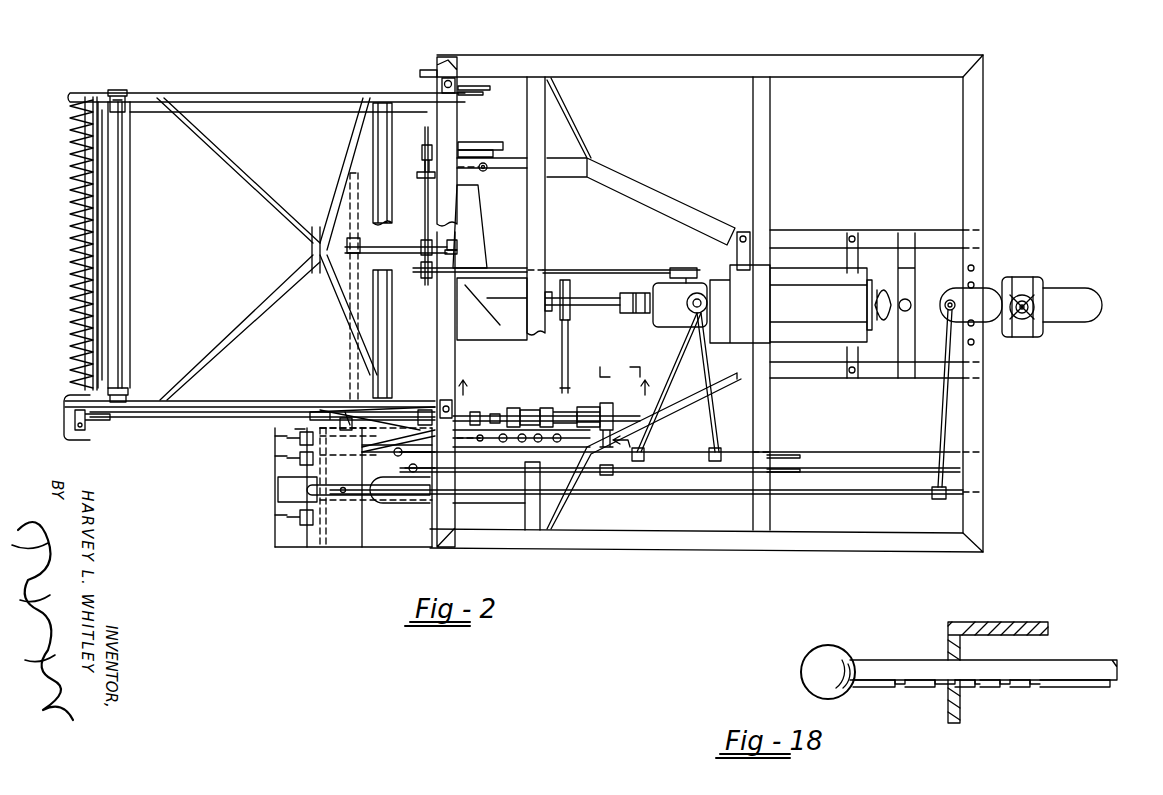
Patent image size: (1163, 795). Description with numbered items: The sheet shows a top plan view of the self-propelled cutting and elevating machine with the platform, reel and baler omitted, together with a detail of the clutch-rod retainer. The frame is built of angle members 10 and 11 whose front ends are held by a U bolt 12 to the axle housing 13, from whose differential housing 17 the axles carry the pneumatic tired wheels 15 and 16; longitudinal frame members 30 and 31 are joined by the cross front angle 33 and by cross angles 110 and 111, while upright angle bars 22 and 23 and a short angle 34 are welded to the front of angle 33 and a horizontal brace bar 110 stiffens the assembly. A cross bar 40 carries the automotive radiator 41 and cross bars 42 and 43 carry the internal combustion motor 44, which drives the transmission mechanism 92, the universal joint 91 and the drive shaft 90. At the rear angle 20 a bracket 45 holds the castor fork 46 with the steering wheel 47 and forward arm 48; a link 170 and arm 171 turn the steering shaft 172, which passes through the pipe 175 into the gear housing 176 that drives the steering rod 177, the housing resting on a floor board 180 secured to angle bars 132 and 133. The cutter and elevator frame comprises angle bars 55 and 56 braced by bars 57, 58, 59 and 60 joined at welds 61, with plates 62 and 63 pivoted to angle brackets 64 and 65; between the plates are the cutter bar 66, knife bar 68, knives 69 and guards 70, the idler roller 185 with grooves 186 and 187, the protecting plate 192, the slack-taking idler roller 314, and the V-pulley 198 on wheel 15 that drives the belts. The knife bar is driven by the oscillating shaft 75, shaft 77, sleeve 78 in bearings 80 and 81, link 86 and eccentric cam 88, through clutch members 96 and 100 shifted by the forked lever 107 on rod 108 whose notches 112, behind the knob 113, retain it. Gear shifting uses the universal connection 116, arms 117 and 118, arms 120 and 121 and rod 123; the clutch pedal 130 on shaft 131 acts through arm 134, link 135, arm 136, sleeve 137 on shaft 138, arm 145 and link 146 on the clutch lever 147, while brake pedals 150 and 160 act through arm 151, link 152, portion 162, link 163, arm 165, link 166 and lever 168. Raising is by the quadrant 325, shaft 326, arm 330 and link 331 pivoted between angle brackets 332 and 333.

In FIG. 2, the angle member 10 is at (684, 400).
In FIG. 2, the angle member 11 is at (568, 170).
In FIG. 2, the U bolt 12 is at (484, 172).
In FIG. 2, the axle housing 13 is at (483, 243).
In FIG. 2, the pneumatic tired wheel 15 is at (598, 274).
In FIG. 2, the pneumatic tired wheel 16 is at (482, 520).
In FIG. 2, the differential housing 17 is at (498, 318).
In FIG. 2, the rear angle 20 is at (978, 162).
In FIG. 2, the vertically disposed angle bar 22 is at (426, 68).
In FIG. 2, the vertically disposed angle bar 23 is at (455, 438).
In FIG. 2, the frame member 30 is at (675, 62).
In FIG. 2, the frame member 31 is at (712, 543).
In FIG. 2, the cross front angle 33 is at (450, 218).
In FIG. 18, the cross front angle 33 is at (1010, 624).
In FIG. 2, the short angle 34 is at (420, 178).
In FIG. 2, the cross bar 40 is at (912, 232).
In FIG. 2, the automotive radiator 41 is at (912, 280).
In FIG. 2, the cross bar 42 is at (848, 238).
In FIG. 2, the cross bar 43 is at (740, 232).
In FIG. 2, the internal combustion motor 44 is at (800, 304).
In FIG. 2, the bracket 45 is at (1035, 306).
In FIG. 2, the castor fork 46 is at (1038, 280).
In FIG. 2, the pneumatic tired wheel 47 is at (1090, 292).
In FIG. 2, the arm 48 is at (990, 288).
In FIG. 2, the angle bar 55 is at (288, 112).
In FIG. 2, the angle bar 56 is at (222, 400).
In FIG. 2, the brace bar 57 is at (248, 186).
In FIG. 2, the brace bar 58 is at (342, 203).
In FIG. 2, the brace bar 59 is at (256, 296).
In FIG. 2, the brace bar 60 is at (340, 294).
In FIG. 2, the welded joint 61 is at (312, 250).
In FIG. 2, the plate 62 is at (272, 94).
In FIG. 2, the plate 63 is at (248, 400).
In FIG. 2, the angle bracket 64 is at (450, 72).
In FIG. 2, the angle bracket 65 is at (444, 400).
In FIG. 2, the cutter bar 66 is at (70, 185).
In FIG. 2, the knife bar 68 is at (90, 430).
In FIG. 2, the knives 69 is at (70, 292).
In FIG. 2, the guards 70 is at (70, 248).
In FIG. 2, the oscillating shaft 75 is at (190, 420).
In FIG. 2, the shaft 77 is at (496, 410).
In FIG. 2, the sleeve 78 is at (531, 410).
In FIG. 2, the bearing 80 is at (514, 408).
In FIG. 2, the bearing 81 is at (546, 408).
In FIG. 2, the link 86 is at (562, 357).
In FIG. 2, the eccentric cam 88 is at (563, 280).
In FIG. 2, the drive shaft 90 is at (600, 306).
In FIG. 2, the universal joint 91 is at (635, 314).
In FIG. 2, the transmission mechanism 92 is at (668, 323).
In FIG. 2, the clutch member 96 is at (585, 406).
In FIG. 2, the clutch portion 100 is at (604, 403).
In FIG. 2, the forked lever 107 is at (612, 470).
In FIG. 2, the rod 108 is at (686, 471).
In FIG. 18, the rod 108 is at (1078, 664).
In FIG. 2, the cross angle 110 is at (545, 222).
In FIG. 2, the cross angle 111 is at (770, 420).
In FIG. 18, the notches 112 is at (975, 688).
In FIG. 18, the knob 113 is at (834, 650).
In FIG. 2, the universal connection 116 is at (688, 302).
In FIG. 2, the arm 117 is at (675, 358).
In FIG. 2, the arm 118 is at (712, 413).
In FIG. 2, the upwardly projecting arm 120 is at (640, 461).
In FIG. 2, the upwardly projecting arm 121 is at (720, 450).
In FIG. 2, the slidable and oscillatable rod 123 is at (778, 455).
In FIG. 2, the clutch pedal 130 is at (282, 520).
In FIG. 2, the shaft 131 is at (320, 548).
In FIG. 2, the angle bar 132 is at (408, 548).
In FIG. 2, the angle bar 133 is at (398, 457).
In FIG. 2, the downwardly projecting arm 134 is at (335, 412).
In FIG. 2, the link 135 is at (346, 418).
In FIG. 2, the arm 136 is at (424, 410).
In FIG. 2, the sleeve 137 is at (388, 293).
In FIG. 2, the shaft 138 is at (424, 226).
In FIG. 2, the downwardly projecting arm 145 is at (418, 270).
In FIG. 2, the link 146 is at (637, 268).
In FIG. 2, the clutch lever 147 is at (688, 268).
In FIG. 2, the brake pedal 150 is at (285, 462).
In FIG. 2, the arm 151 is at (328, 460).
In FIG. 2, the link 152 is at (370, 455).
In FIG. 2, the brake pedal 160 is at (280, 450).
In FIG. 2, the downwardly extending portion 162 is at (280, 428).
In FIG. 2, the link 163 is at (396, 433).
In FIG. 2, the arm 165 is at (422, 155).
In FIG. 2, the link 166 is at (466, 150).
In FIG. 2, the lever 168 is at (495, 142).
In FIG. 2, the link 170 is at (941, 420).
In FIG. 2, the downwardly projecting arm 171 is at (936, 500).
In FIG. 2, the shaft 172 is at (848, 492).
In FIG. 2, the pipe 175 is at (380, 503).
In FIG. 2, the gear housing 176 is at (280, 490).
In FIG. 2, the steering rod 177 is at (335, 495).
In FIG. 2, the floor board 180 is at (292, 548).
In FIG. 2, the idler roller 185 is at (130, 245).
In FIG. 2, the groove 186 is at (126, 390).
In FIG. 2, the groove 187 is at (125, 105).
In FIG. 2, the protecting plate 192 is at (128, 320).
In FIG. 2, the V-pulley 198 is at (478, 82).
In FIG. 2, the idler roller 314 is at (389, 325).
In FIG. 2, the quadrant 325 is at (310, 412).
In FIG. 2, the shaft 326 is at (352, 346).
In FIG. 2, the downwardly extending arm 330 is at (360, 247).
In FIG. 2, the link 331 is at (412, 250).
In FIG. 2, the angle bracket 332 is at (456, 252).
In FIG. 2, the angle bracket 333 is at (455, 243).